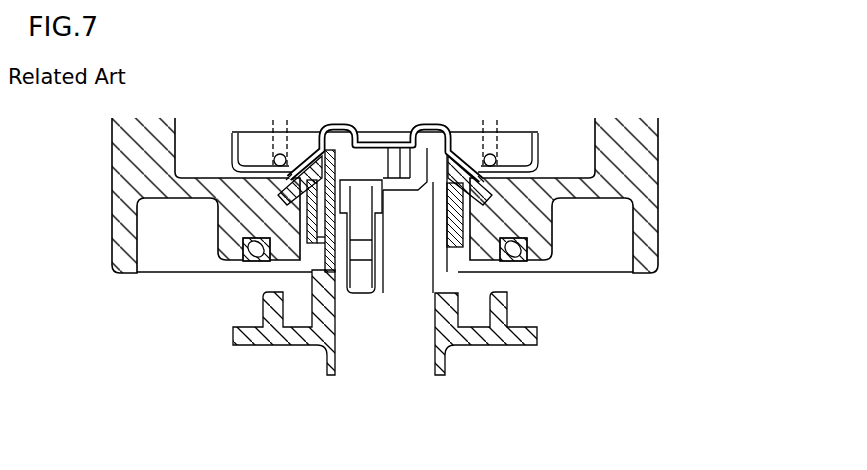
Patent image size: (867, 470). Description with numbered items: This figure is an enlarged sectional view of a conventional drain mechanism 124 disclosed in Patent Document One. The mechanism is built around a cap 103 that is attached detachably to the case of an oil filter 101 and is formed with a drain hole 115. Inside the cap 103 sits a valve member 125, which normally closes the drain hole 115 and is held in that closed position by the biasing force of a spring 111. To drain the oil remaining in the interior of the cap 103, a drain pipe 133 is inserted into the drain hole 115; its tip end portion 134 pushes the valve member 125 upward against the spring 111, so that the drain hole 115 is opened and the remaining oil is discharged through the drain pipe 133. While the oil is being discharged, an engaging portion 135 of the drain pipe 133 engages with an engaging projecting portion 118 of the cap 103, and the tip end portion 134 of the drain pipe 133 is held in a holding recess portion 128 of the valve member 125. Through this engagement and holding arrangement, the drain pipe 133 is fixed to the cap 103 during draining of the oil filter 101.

The oil filter 101 is at (430, 168).
The cap 103 is at (661, 189).
The spring 111 is at (497, 150).
The drain hole 115 is at (456, 214).
The engaging projecting portion 118 is at (306, 155).
The drain mechanism 124 is at (436, 338).
The valve member 125 is at (228, 147).
The holding recess portion 128 is at (340, 127).
The drain pipe 133 is at (472, 349).
The tip end portion 134 is at (352, 135).
The engaging portion 135 is at (300, 196).